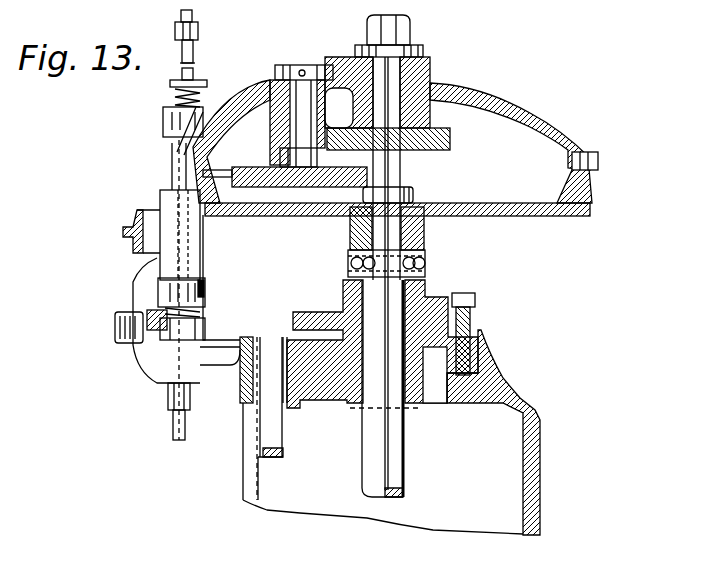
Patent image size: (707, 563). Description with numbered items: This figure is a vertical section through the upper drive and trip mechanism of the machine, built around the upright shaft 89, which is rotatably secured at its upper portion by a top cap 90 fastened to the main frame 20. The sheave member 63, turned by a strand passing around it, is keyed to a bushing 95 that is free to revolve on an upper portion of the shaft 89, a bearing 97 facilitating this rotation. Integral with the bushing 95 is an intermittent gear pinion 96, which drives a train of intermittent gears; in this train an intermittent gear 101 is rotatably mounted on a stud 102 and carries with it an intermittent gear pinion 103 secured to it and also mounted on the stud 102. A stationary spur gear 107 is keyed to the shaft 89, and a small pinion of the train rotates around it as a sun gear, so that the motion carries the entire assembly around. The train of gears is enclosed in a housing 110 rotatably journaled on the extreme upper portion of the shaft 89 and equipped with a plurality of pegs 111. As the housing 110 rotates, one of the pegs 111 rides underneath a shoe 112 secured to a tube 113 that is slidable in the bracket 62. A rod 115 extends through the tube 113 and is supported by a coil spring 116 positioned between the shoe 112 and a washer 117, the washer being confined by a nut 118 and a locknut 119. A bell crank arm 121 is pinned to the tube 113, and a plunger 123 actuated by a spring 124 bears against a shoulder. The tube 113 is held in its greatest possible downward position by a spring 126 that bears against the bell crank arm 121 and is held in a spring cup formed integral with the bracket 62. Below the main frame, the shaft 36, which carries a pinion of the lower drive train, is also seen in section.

The main frame 20 is at (530, 393).
The shaft 36 is at (257, 460).
The bracket 62 is at (137, 213).
The sheave member 63 is at (590, 210).
The upright shaft 89 is at (405, 30).
The top cap 90 is at (478, 322).
The bushing 95 is at (424, 240).
The intermittent gear pinion 96 is at (416, 195).
The bearing 97 is at (428, 266).
The intermittent gear 101 is at (300, 182).
The stud 102 is at (338, 40).
The intermittent gear pinion 103 is at (280, 160).
The stationary spur gear 107 is at (450, 140).
The housing 110 is at (505, 110).
The peg 111 is at (598, 160).
The shoe 112 is at (165, 114).
The tube 113 is at (172, 170).
The rod 115 is at (193, 62).
The coil spring 116 is at (172, 86).
The washer 117 is at (178, 80).
The nut 118 is at (198, 30).
The locknut 119 is at (195, 22).
The bell crank arm 121 is at (205, 330).
The plunger 123 is at (135, 357).
The spring 124 is at (115, 325).
The spring 126 is at (200, 305).